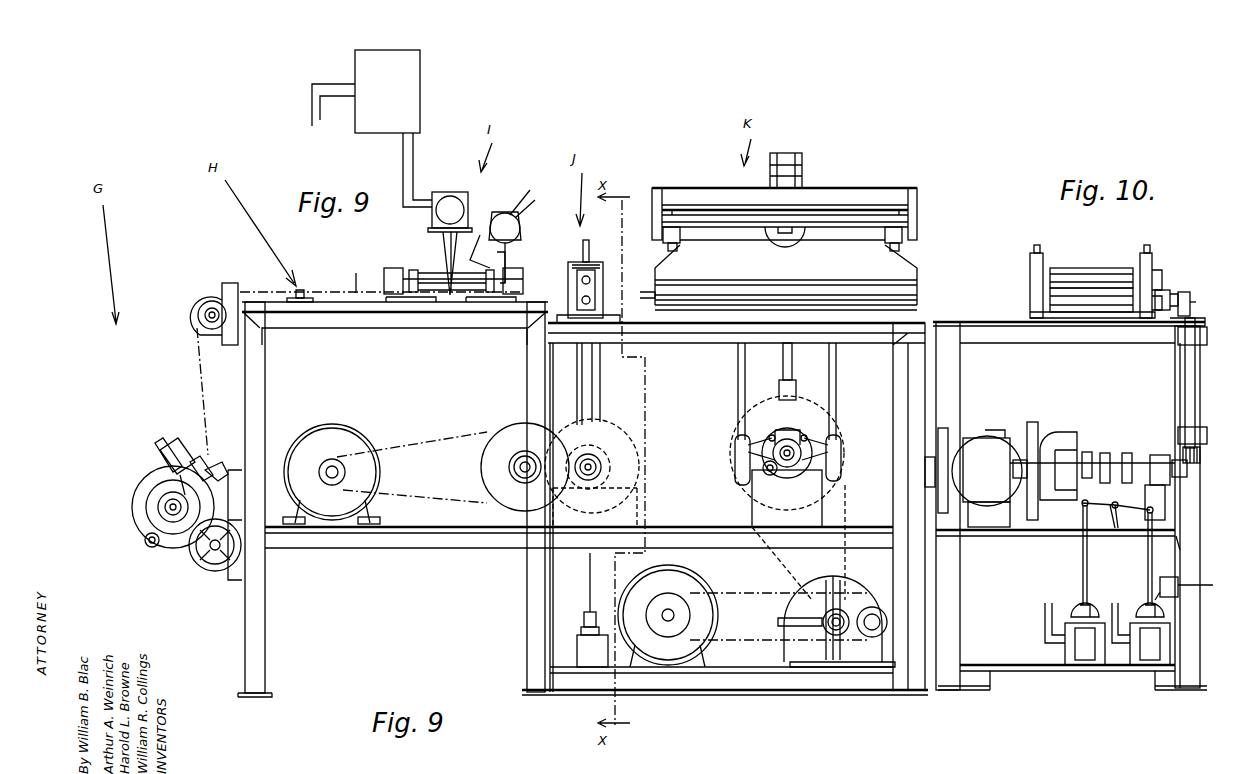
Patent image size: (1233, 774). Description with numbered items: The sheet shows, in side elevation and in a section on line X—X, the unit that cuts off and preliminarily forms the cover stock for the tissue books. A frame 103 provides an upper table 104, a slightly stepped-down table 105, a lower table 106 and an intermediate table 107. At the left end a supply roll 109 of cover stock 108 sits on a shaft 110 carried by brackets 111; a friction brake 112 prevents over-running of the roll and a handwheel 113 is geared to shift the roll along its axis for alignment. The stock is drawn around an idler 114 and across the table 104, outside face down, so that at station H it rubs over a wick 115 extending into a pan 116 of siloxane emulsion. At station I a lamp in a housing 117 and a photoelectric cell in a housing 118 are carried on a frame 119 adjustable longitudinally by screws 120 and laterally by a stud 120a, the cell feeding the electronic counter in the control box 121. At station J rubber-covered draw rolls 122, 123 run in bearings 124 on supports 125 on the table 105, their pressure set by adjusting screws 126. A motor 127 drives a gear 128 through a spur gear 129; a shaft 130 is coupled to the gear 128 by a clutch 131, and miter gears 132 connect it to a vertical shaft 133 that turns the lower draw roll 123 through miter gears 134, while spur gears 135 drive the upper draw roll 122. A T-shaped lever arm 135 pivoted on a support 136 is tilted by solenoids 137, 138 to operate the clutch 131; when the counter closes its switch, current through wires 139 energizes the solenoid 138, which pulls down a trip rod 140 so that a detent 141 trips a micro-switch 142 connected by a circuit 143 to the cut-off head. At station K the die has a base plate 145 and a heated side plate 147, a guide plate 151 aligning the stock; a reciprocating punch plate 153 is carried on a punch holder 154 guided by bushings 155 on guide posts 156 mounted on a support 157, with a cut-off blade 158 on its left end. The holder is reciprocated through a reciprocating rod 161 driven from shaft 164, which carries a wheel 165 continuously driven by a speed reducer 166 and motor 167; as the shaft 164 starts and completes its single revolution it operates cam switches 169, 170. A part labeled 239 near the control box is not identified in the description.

In FIG. 9, the frame 103 is at (266, 650).
In FIG. 9, the upper table 104 is at (416, 326).
In FIG. 9, the table 105 is at (707, 342).
In FIG. 9, the lower table 106 is at (746, 676).
In FIG. 9, the intermediate table 107 is at (760, 540).
In FIG. 9, the cover stock 108 is at (356, 275).
In FIG. 9, the supply roll 109 is at (140, 498).
In FIG. 9, the shaft 110 is at (170, 507).
In FIG. 9, the brackets 111 is at (208, 470).
In FIG. 9, the friction brake 112 is at (179, 440).
In FIG. 9, the handwheel 113 is at (212, 572).
In FIG. 9, the idler 114 is at (195, 315).
In FIG. 9, the wick 115 is at (303, 294).
In FIG. 9, the pan 116 is at (309, 312).
In FIG. 9, the lamp housing 117 is at (500, 213).
In FIG. 9, the photoelectric cell housing 118 is at (447, 198).
In FIG. 9, the frame 119 is at (492, 260).
In FIG. 9, the screws 120 is at (403, 272).
In FIG. 9, the stud 120a is at (458, 300).
In FIG. 9, the control box 121 is at (409, 104).
In FIG. 10, the upper draw roll 122 is at (1067, 270).
In FIG. 10, the lower draw roll 123 is at (1095, 298).
In FIG. 9, the bearings 124 is at (576, 291).
In FIG. 9, the supports 125 is at (604, 270).
In FIG. 10, the supports 125 is at (1150, 265).
In FIG. 9, the adjusting screws 126 is at (587, 252).
In FIG. 10, the adjusting screws 126 is at (1147, 252).
In FIG. 9, the motor 127 is at (345, 443).
In FIG. 10, the motor 127 is at (1000, 421).
In FIG. 9, the gear 128 is at (562, 432).
In FIG. 10, the gear 128 is at (1035, 430).
In FIG. 9, the spur gear 129 is at (492, 466).
In FIG. 10, the shaft 130 is at (1130, 460).
In FIG. 10, the clutch 131 is at (1105, 452).
In FIG. 10, the miter gears 132 is at (1197, 465).
In FIG. 10, the vertical shaft 133 is at (1188, 354).
In FIG. 10, the miter gears 134 is at (1190, 305).
In FIG. 10, the T-shaped lever arm 135 is at (1168, 292).
In FIG. 10, the support 136 is at (1118, 512).
In FIG. 10, the solenoid 137 is at (1085, 670).
In FIG. 10, the solenoid 138 is at (1145, 668).
In FIG. 10, the wires 139 is at (1115, 602).
In FIG. 10, the trip rod 140 is at (1152, 566).
In FIG. 10, the detent 141 is at (1160, 598).
In FIG. 10, the micro-switch 142 is at (1178, 582).
In FIG. 10, the circuit 143 is at (1178, 592).
In FIG. 9, the base plate 145 is at (905, 312).
In FIG. 9, the side plate 147 is at (905, 298).
In FIG. 9, the guide plate 151 is at (905, 285).
In FIG. 9, the reciprocating punch plate 153 is at (897, 270).
In FIG. 9, the punch holder 154 is at (903, 250).
In FIG. 9, the bushings 155 is at (668, 228).
In FIG. 9, the guide posts 156 is at (678, 208).
In FIG. 9, the support 157 is at (832, 195).
In FIG. 9, the cut-off blade 158 is at (652, 288).
In FIG. 9, the reciprocating rod 161 is at (784, 352).
In FIG. 9, the shaft 164 is at (791, 476).
In FIG. 9, the wheel 165 is at (800, 402).
In FIG. 9, the speed reducer 166 is at (818, 580).
In FIG. 9, the motor 167 is at (690, 583).
In FIG. 9, the cam switch 169 is at (736, 443).
In FIG. 9, the cam switch 170 is at (834, 452).
In FIG. 9, the pipe 239 is at (320, 119).